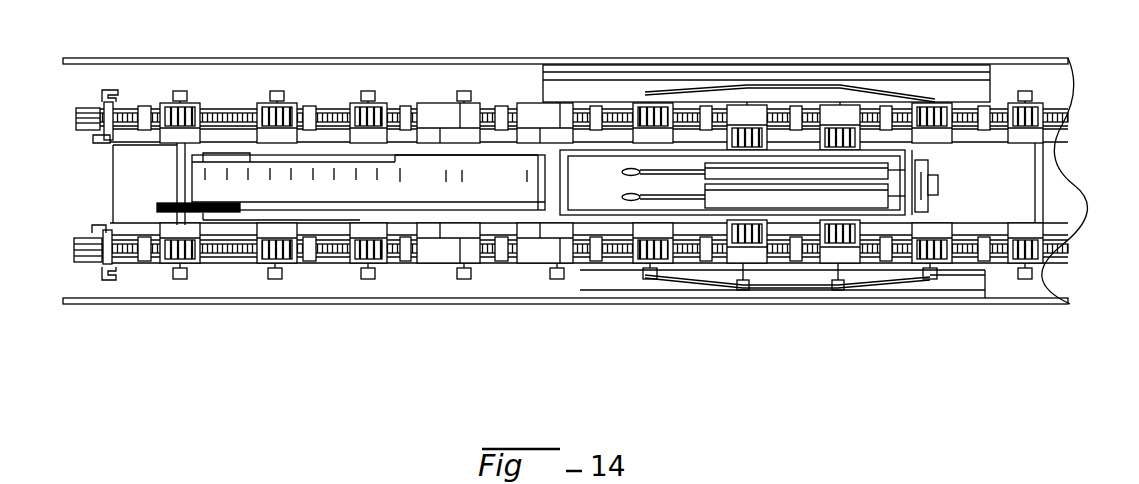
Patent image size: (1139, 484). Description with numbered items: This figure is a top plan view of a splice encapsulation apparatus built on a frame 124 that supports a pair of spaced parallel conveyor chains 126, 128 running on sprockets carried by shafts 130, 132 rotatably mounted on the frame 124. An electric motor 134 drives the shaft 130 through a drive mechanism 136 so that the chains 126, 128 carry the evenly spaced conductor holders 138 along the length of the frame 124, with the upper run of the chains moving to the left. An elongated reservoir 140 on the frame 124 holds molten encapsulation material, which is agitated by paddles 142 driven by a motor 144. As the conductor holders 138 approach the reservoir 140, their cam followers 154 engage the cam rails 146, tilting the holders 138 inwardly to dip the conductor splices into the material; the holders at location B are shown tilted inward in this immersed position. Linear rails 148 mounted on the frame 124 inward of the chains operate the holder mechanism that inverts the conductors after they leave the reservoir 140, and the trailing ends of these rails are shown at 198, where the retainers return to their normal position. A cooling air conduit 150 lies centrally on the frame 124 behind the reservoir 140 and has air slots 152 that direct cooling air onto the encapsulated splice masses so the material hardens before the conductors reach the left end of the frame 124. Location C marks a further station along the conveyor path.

The frame 124 is at (292, 306).
The conveyor chain 126 is at (236, 108).
The conveyor chain 128 is at (329, 264).
The shaft 130 is at (176, 175).
The shaft 132 is at (1066, 188).
The electric motor 134 is at (278, 90).
The drive mechanism 136 is at (226, 238).
The conductor holder 138 is at (527, 103).
The reservoir 140 is at (732, 182).
The paddle 142 is at (700, 183).
The motor 144 is at (932, 170).
The cam rail 146 is at (885, 90).
The linear rail 148 is at (490, 158).
The cooling air conduit 150 is at (304, 170).
The air slot 152 is at (346, 183).
The cam follower 154 is at (366, 89).
The rail end 198 is at (396, 153).
The location B is at (833, 250).
The block pair C is at (527, 263).